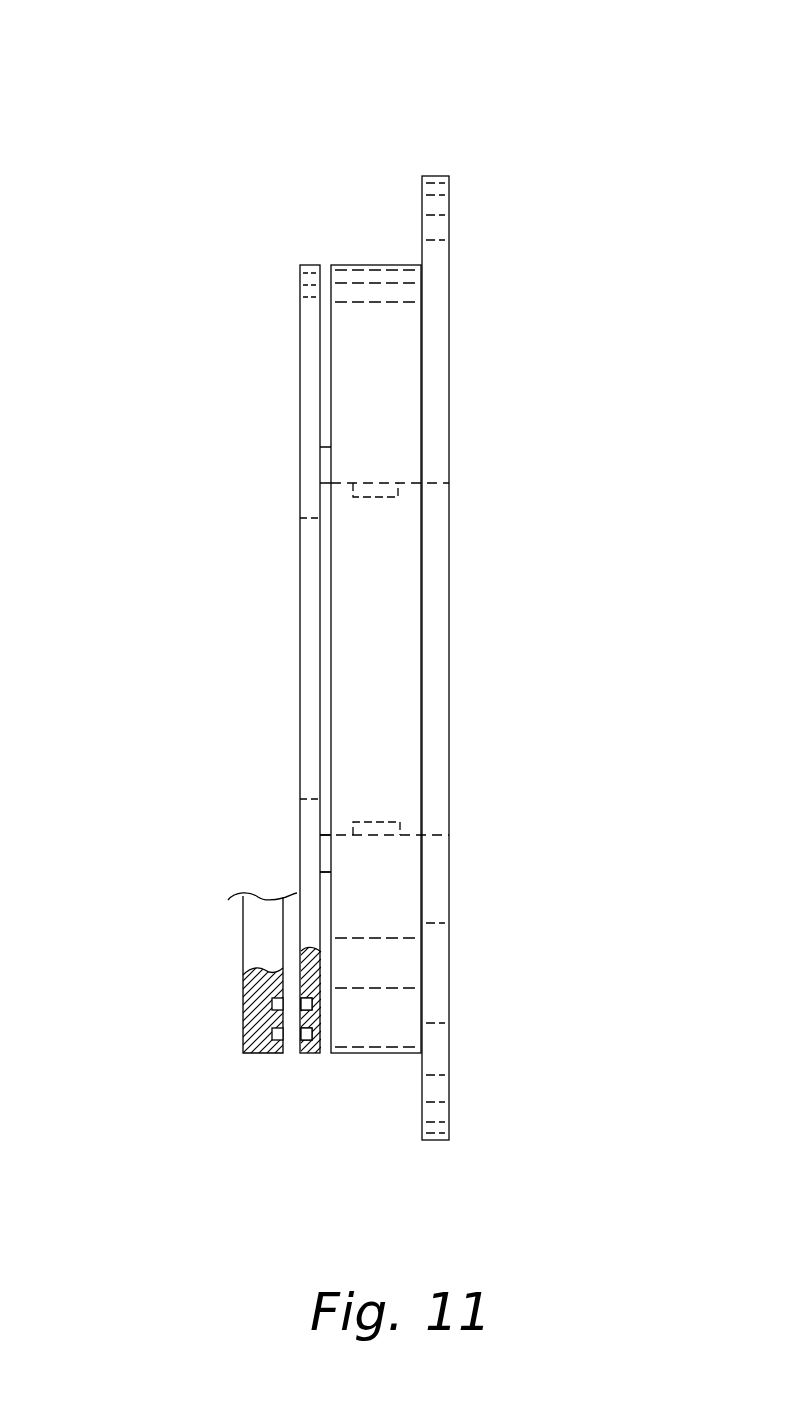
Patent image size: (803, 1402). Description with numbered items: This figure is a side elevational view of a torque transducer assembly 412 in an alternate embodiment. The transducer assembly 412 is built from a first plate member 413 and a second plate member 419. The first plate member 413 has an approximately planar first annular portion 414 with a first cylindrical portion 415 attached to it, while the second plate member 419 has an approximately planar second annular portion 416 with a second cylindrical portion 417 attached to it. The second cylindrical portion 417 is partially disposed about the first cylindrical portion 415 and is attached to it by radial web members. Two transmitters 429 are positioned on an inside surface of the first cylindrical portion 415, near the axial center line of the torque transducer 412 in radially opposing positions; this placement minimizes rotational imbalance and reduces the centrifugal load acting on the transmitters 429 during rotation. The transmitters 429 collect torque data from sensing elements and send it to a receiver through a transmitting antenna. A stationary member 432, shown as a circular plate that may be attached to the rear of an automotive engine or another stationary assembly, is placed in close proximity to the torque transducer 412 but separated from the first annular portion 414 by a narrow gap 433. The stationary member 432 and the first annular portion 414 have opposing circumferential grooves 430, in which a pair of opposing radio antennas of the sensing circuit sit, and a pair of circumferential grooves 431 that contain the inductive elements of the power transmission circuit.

The torque transducer assembly 412 is at (348, 87).
The first plate member 413 is at (250, 489).
The first annular portion 414 is at (300, 300).
The first cylindrical portion 415 is at (327, 873).
The second annular portion 416 is at (433, 176).
The second cylindrical portion 417 is at (358, 265).
The second plate member 419 is at (510, 250).
The transmitters 429 is at (374, 490).
The opposing circumferential grooves 430 is at (305, 1001).
The circumferential grooves 431 is at (275, 1036).
The stationary member 432 is at (250, 1017).
The narrow gap 433 is at (292, 1063).